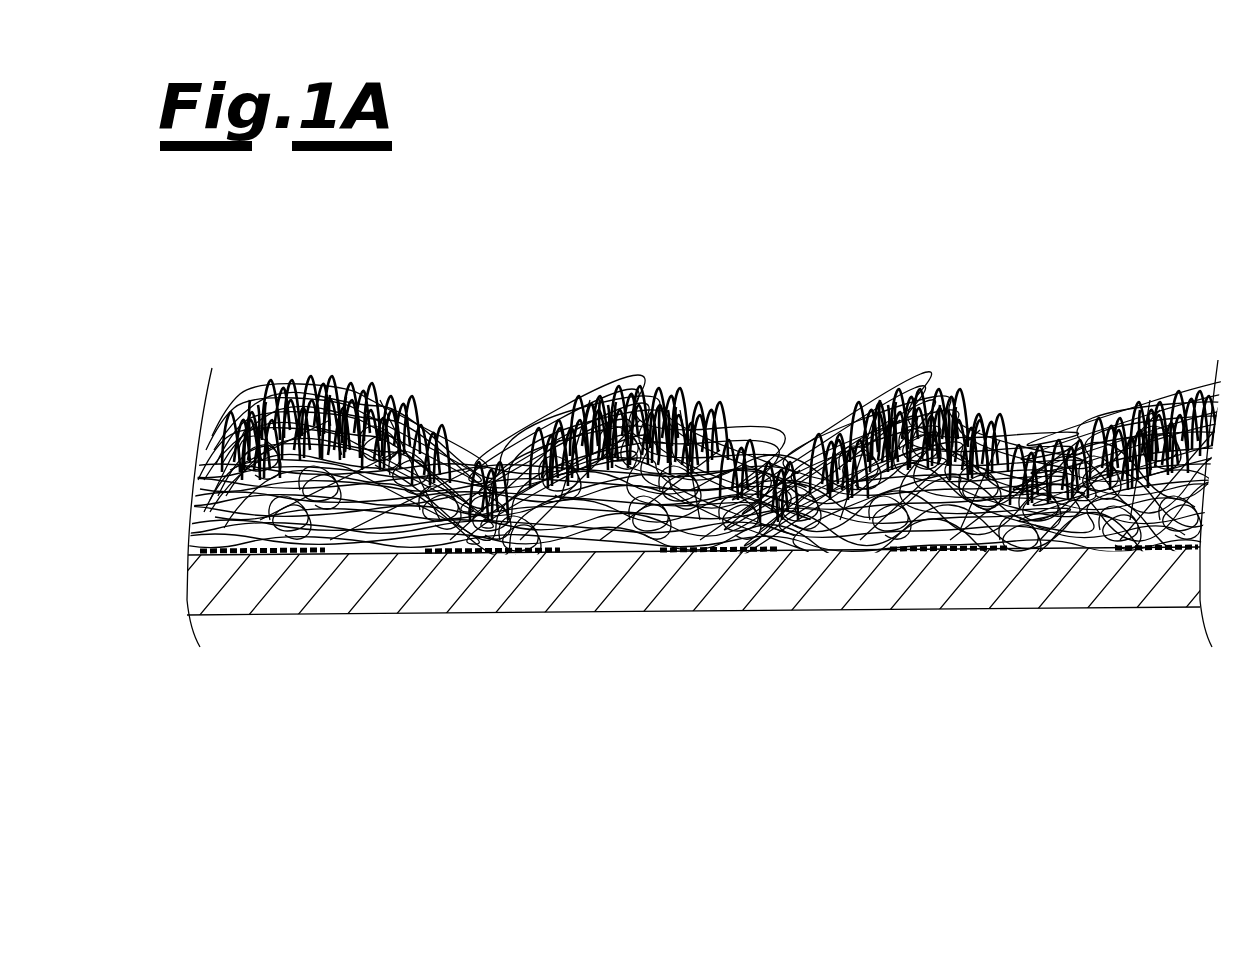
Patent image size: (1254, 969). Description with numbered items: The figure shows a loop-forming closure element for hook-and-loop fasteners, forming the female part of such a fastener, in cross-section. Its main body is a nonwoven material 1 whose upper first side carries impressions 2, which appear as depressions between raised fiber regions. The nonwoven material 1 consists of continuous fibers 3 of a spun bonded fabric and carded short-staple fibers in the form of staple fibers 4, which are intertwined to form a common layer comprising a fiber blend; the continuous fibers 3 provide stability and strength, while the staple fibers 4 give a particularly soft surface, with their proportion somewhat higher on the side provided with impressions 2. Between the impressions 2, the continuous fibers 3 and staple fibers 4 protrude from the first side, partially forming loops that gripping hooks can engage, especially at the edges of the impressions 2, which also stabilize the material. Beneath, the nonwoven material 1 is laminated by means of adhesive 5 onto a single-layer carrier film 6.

The nonwoven material 1 is at (138, 505).
The impressions 2 is at (480, 428).
The continuous fibers 3 is at (347, 500).
The staple fibers 4 is at (305, 378).
The adhesive 5 is at (730, 553).
The carrier film 6 is at (520, 612).